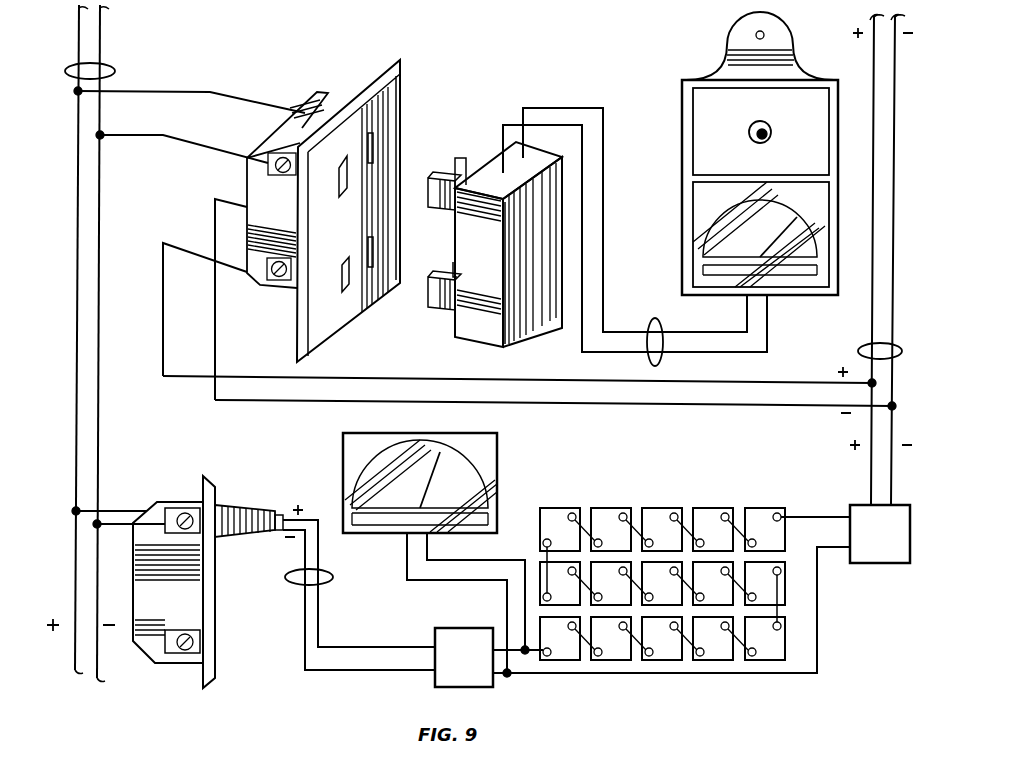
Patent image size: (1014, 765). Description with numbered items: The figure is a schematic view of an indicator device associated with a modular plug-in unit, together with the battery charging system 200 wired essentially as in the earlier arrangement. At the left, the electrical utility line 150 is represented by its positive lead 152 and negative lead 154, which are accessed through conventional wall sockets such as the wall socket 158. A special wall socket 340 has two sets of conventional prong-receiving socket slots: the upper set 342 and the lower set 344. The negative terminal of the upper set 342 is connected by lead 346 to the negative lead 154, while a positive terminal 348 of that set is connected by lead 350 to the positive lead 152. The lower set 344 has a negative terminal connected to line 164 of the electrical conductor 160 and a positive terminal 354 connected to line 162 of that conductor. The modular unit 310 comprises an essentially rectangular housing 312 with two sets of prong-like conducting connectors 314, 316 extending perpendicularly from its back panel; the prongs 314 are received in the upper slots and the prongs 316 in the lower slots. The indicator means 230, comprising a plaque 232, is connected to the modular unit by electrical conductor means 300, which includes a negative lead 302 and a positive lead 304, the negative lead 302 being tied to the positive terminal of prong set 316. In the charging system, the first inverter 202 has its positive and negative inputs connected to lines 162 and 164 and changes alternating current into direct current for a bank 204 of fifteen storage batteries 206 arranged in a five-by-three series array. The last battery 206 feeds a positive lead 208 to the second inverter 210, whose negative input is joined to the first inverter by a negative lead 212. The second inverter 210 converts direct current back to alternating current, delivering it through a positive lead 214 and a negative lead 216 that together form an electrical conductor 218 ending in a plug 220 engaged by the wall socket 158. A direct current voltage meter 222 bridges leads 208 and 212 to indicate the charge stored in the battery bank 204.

The electrical utility line 150 is at (115, 71).
The positive lead 152 is at (78, 33).
The negative lead 154 is at (102, 47).
The wall socket 158 is at (235, 661).
The electrical conductor 160 is at (857, 352).
The line 162 is at (595, 384).
The line 164 is at (672, 407).
The battery charging system 200 is at (695, 551).
The first inverter 202 is at (850, 503).
The bank of storage batteries 204 is at (614, 497).
The storage battery 206 is at (715, 488).
The positive lead 208 is at (527, 653).
The second inverter 210 is at (435, 630).
The negative lead 212 is at (668, 677).
The positive lead 214 is at (331, 613).
The negative lead 216 is at (305, 613).
The electrical conductor 218 is at (286, 575).
The plug 220 is at (240, 505).
The direct current voltage meter 222 is at (497, 465).
The indicator means 230 is at (681, 96).
The plaque 232 is at (727, 48).
The electrical conductor means 300 is at (662, 297).
The negative lead 302 is at (747, 308).
The positive lead 304 is at (767, 307).
The modular unit 310 is at (487, 125).
The housing 312 is at (525, 312).
The prong set 314 is at (441, 206).
The prong set 316 is at (427, 297).
The special wall socket 340 is at (400, 97).
The upper set of socket slots 342 is at (340, 176).
The lower set of socket slots 344 is at (333, 290).
The lead 346 is at (253, 100).
The positive terminal 348 is at (283, 176).
The lead 350 is at (199, 150).
The positive terminal 354 is at (279, 283).